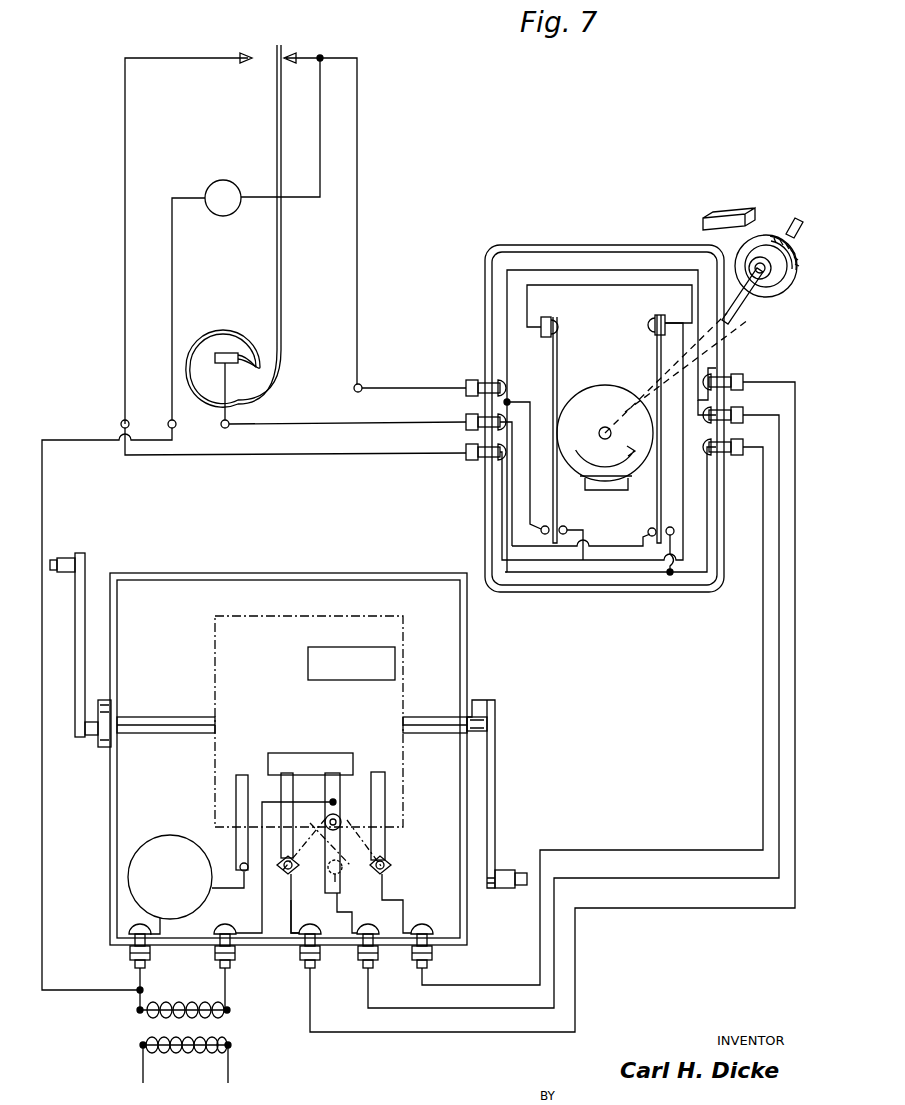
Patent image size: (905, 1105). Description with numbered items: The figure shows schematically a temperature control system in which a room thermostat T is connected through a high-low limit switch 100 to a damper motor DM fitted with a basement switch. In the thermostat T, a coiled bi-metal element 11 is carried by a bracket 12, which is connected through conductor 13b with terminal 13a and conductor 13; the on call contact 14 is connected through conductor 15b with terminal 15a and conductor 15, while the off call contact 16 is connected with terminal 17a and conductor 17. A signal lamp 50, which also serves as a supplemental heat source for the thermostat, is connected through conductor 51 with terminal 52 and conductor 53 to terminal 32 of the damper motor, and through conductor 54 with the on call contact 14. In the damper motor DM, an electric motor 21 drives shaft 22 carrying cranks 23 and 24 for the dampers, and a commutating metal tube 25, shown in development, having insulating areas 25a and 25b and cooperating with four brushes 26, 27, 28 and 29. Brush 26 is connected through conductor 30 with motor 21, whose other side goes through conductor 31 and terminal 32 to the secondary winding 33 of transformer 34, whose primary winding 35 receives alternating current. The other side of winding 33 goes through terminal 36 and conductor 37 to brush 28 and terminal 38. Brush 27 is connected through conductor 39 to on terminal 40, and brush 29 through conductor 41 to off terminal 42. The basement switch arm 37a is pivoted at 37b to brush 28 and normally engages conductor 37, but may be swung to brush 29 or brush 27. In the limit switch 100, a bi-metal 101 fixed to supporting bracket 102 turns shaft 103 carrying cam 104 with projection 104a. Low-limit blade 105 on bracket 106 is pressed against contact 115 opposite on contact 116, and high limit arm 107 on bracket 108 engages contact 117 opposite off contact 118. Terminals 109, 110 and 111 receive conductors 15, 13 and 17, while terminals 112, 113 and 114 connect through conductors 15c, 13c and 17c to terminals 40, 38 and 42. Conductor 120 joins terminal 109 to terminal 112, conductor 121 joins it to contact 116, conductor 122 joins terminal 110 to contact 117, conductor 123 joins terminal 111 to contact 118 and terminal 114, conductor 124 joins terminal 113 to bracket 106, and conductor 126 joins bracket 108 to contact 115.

The coiled bi-metal element 11 is at (284, 286).
The bracket 12 is at (224, 354).
The conductor 13 is at (337, 420).
The terminal 13a is at (231, 425).
The conductor 13b is at (228, 380).
The conductor 13c is at (370, 1000).
The on call contact 14 is at (286, 63).
The conductor 15 is at (385, 397).
The terminal 15a is at (362, 384).
The conductor 15b is at (362, 157).
The conductor 15c is at (313, 1015).
The off call contact 16 is at (251, 70).
The conductor 17 is at (288, 463).
The terminal 17a is at (122, 421).
The conductor 17c is at (470, 987).
The electric motor 21 is at (170, 877).
The shaft 22 is at (157, 715).
The crank 23 is at (75, 637).
The crank 24 is at (496, 789).
The metal tube 25 is at (404, 752).
The insulating area 25a is at (345, 753).
The insulating area 25b is at (335, 647).
The brush 26 is at (236, 845).
The brush 27 is at (285, 878).
The brush 28 is at (340, 802).
The brush 29 is at (386, 790).
The conductor 30 is at (220, 890).
The conductor 31 is at (165, 930).
The terminal 32 is at (130, 956).
The secondary winding 33 is at (185, 1001).
The transformer 34 is at (129, 1028).
The primary winding 35 is at (160, 1052).
The terminal 36 is at (215, 956).
The conductor 37 is at (350, 912).
The switch arm 37a is at (362, 857).
The pivot 37b is at (345, 822).
The terminal 38 is at (358, 960).
The conductor 39 is at (293, 912).
The on terminal 40 is at (305, 968).
The conductor 41 is at (405, 897).
The off terminal 42 is at (413, 960).
The signal device 50 is at (223, 198).
The conductor 51 is at (175, 290).
The terminal 52 is at (176, 430).
The conductor 53 is at (60, 438).
The conductor 54 is at (306, 196).
The high-low limit switch 100 is at (486, 266).
The bi-metal 101 is at (775, 224).
The supporting bracket 102 is at (745, 208).
The shaft 103 is at (740, 306).
The cam 104 is at (605, 437).
The projection 104a is at (600, 488).
The low-limit contact blade 105 is at (558, 350).
The bracket 106 is at (547, 316).
The high limit spring contact arm 107 is at (656, 352).
The bracket 108 is at (659, 314).
The terminal 109 is at (478, 398).
The terminal 110 is at (470, 430).
The terminal 111 is at (455, 468).
The terminal 112 is at (745, 381).
The terminal 113 is at (745, 414).
The off terminal 114 is at (746, 446).
The contact 115 is at (570, 576).
The on contact 116 is at (540, 528).
The high limit contact 117 is at (647, 532).
The off contact 118 is at (676, 529).
The conductor 120 is at (655, 270).
The conductor 121 is at (540, 415).
The conductor 122 is at (530, 508).
The conductor 123 is at (512, 494).
The conductor 124 is at (593, 286).
The conductor 126 is at (706, 350).
The room thermostat T is at (160, 185).
The damper motor DM is at (245, 563).